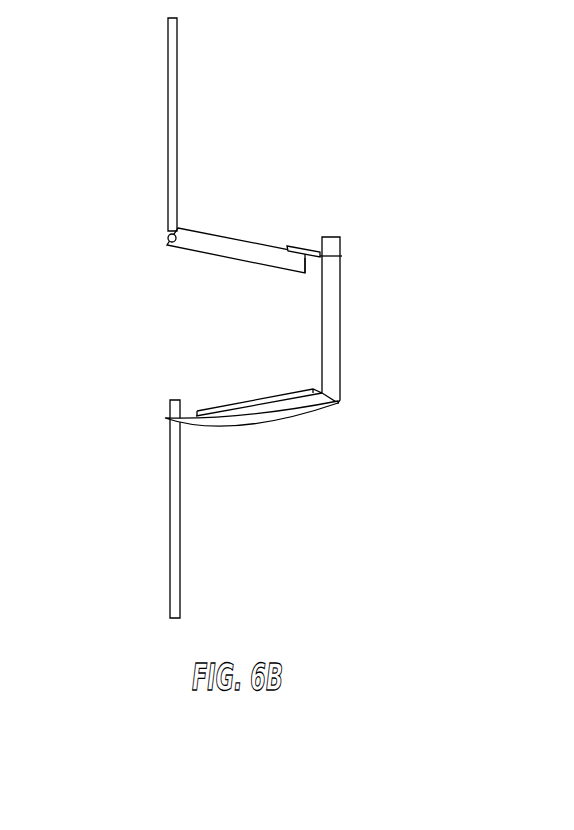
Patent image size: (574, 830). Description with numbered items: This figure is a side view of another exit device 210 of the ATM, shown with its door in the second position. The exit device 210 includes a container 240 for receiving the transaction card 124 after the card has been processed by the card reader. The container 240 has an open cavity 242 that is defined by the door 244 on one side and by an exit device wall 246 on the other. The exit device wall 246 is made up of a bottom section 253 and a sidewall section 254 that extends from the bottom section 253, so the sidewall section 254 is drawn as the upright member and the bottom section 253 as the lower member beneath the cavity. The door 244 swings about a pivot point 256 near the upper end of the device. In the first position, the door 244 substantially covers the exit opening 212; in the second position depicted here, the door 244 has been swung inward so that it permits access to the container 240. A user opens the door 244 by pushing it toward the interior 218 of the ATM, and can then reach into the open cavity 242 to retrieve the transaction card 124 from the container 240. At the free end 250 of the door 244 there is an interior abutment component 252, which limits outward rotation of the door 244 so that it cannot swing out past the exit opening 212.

The transaction card 124 is at (222, 415).
The exit device 210 is at (84, 203).
The exit opening 212 is at (153, 287).
The interior 218 is at (428, 455).
The container 240 is at (306, 314).
The open cavity 242 is at (260, 355).
The door 244 is at (237, 240).
The exit device wall 246 is at (385, 365).
The free end 250 is at (298, 258).
The interior abutment component 252 is at (313, 248).
The bottom section 253 is at (277, 413).
The sidewall section 254 is at (342, 257).
The pivot point 256 is at (167, 238).